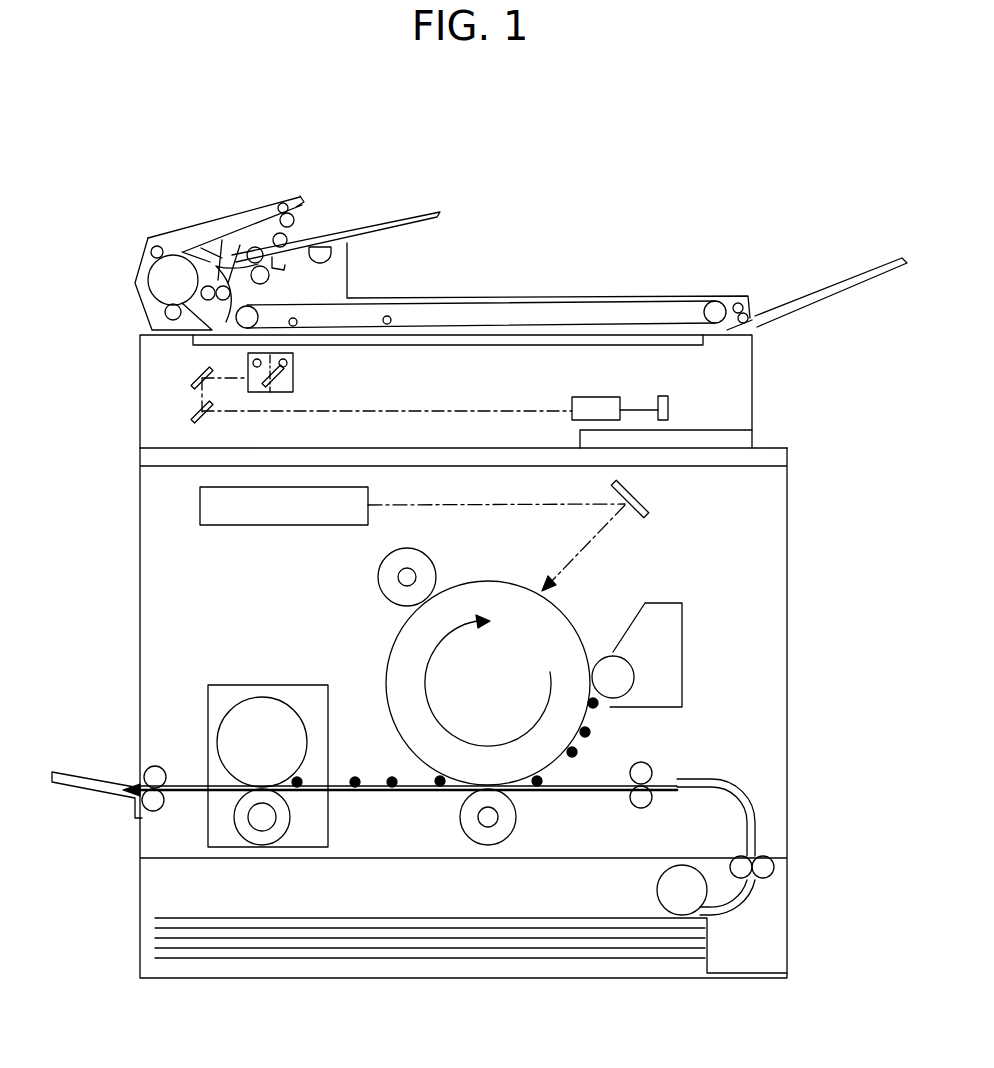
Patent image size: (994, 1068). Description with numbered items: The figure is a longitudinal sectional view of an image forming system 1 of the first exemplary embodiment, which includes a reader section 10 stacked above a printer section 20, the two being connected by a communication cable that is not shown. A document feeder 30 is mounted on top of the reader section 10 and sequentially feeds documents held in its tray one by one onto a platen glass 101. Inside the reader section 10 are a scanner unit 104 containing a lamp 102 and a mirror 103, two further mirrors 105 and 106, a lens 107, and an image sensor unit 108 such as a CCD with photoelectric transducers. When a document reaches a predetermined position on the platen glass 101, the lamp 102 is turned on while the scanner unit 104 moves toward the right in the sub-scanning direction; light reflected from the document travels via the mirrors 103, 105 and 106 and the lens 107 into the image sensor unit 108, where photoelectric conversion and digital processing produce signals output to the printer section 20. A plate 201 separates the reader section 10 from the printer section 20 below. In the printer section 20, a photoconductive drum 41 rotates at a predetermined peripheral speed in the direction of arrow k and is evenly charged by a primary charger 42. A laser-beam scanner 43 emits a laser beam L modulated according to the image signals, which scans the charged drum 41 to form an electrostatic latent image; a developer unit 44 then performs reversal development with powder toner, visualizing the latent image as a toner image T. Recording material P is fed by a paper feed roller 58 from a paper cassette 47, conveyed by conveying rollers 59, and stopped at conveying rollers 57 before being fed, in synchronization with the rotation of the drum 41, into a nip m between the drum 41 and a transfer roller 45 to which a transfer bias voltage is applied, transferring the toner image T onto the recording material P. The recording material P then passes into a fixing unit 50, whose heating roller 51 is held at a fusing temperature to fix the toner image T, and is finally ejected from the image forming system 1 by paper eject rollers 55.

The image forming system 1 is at (663, 160).
The document feeder 30 is at (185, 232).
The reader section 10 is at (753, 370).
The platen glass 101 is at (512, 345).
The lamp 102 is at (293, 362).
The mirror 103 is at (278, 392).
The scanner unit 104 is at (287, 385).
The mirror 105 is at (200, 376).
The mirror 106 is at (200, 410).
The lens 107 is at (606, 398).
The image sensor unit 108 is at (666, 396).
The partition / top plate 201 is at (250, 456).
The printer section 20 is at (787, 658).
The photoconductive drum 41 is at (403, 627).
The primary charger 42 is at (378, 575).
The laser-beam scanner 43 is at (255, 527).
The developer unit 44 is at (682, 656).
The transfer roller 45 is at (517, 822).
The paper cassette 47 is at (523, 975).
The fixing unit 50 is at (298, 685).
The heating roller 51 is at (248, 698).
The paper eject rollers 55 is at (153, 812).
The conveying rollers 57 is at (648, 810).
The paper feed roller 58 is at (657, 888).
The conveying rollers 59 is at (728, 860).
The laser beam L is at (473, 508).
The toner image T is at (392, 778).
The recording material P is at (604, 780).
The arrow k is at (432, 703).
The nip m is at (490, 783).